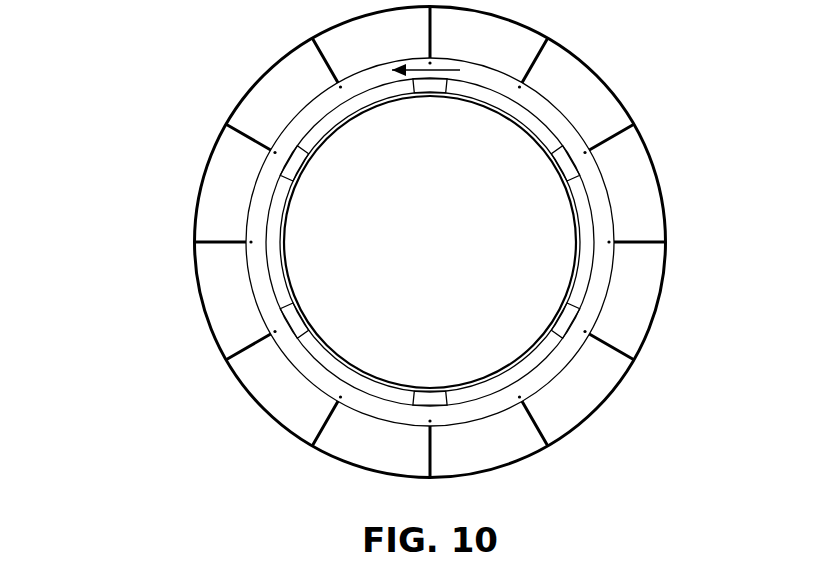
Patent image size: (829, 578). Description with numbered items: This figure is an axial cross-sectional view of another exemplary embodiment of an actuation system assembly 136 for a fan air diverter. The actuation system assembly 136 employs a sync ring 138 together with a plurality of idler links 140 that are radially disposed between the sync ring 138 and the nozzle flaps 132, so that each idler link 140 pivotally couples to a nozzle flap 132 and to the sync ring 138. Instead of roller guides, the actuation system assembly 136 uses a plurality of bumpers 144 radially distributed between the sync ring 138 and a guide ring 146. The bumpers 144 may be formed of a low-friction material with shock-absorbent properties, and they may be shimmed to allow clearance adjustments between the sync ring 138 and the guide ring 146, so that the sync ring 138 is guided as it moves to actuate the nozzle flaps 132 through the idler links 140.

The nozzle flaps 132 is at (582, 62).
The actuation system assembly 136 is at (172, 92).
The sync ring 138 is at (597, 285).
The idler links 140 is at (638, 240).
The bumpers 144 is at (560, 165).
The guide ring 146 is at (368, 105).